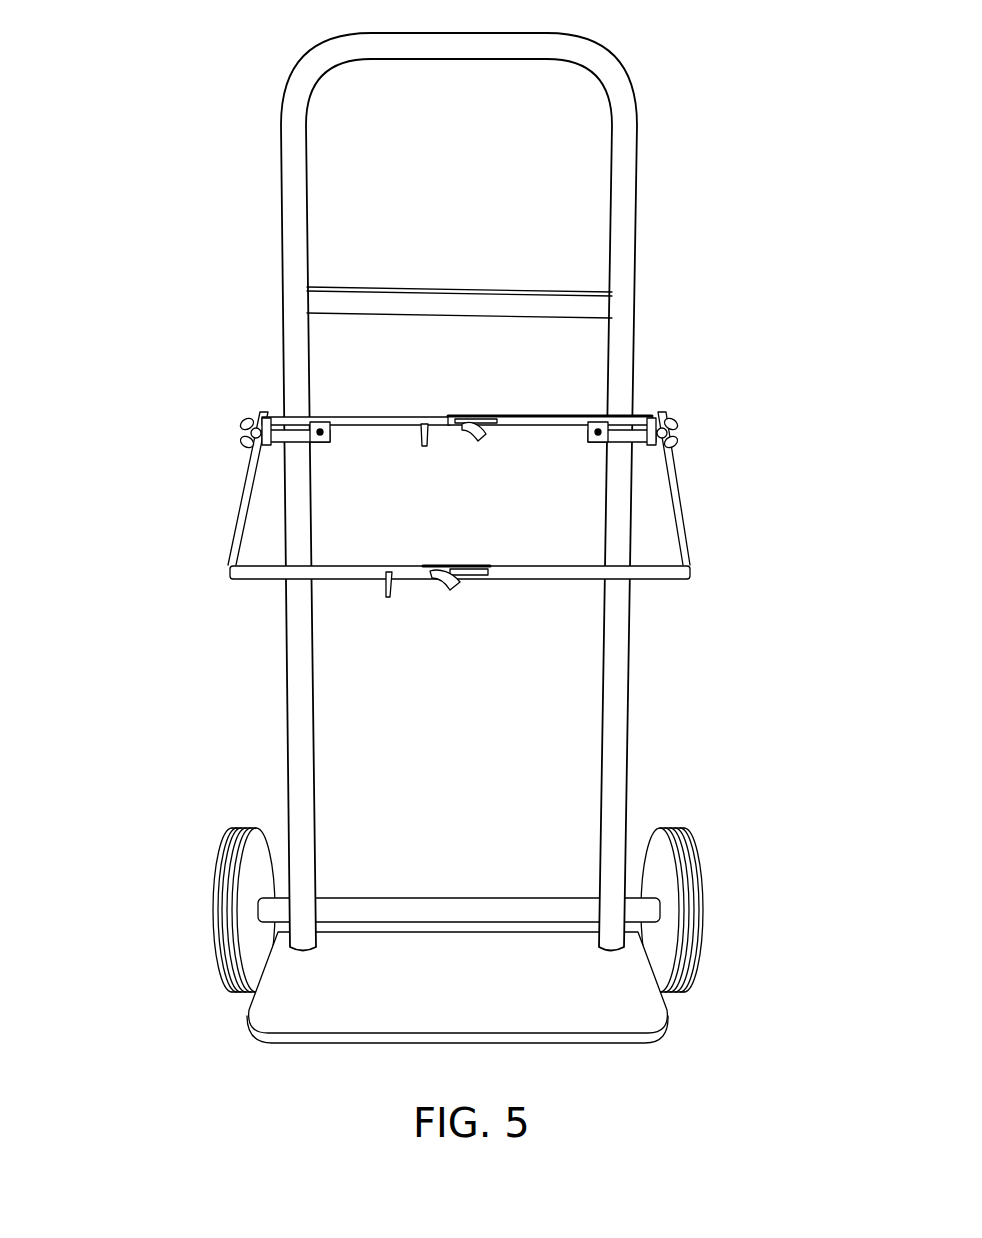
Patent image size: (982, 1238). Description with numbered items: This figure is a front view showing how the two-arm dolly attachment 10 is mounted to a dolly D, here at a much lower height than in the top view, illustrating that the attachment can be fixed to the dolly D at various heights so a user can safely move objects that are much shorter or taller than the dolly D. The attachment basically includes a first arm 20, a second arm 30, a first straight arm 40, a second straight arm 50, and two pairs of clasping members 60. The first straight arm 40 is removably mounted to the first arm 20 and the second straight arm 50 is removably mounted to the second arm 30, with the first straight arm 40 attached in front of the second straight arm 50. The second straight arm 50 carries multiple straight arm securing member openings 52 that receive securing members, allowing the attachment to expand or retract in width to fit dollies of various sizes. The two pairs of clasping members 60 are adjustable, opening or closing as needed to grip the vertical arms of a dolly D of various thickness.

The dolly D is at (627, 225).
The two-arm dolly attachment 10 is at (437, 437).
The first arm 20 is at (232, 578).
The second arm 30 is at (690, 570).
The first straight arm 40 is at (380, 428).
The second straight arm 50 is at (554, 423).
The straight arm securing member openings 52 is at (483, 418).
The clasping members 60 is at (293, 433).